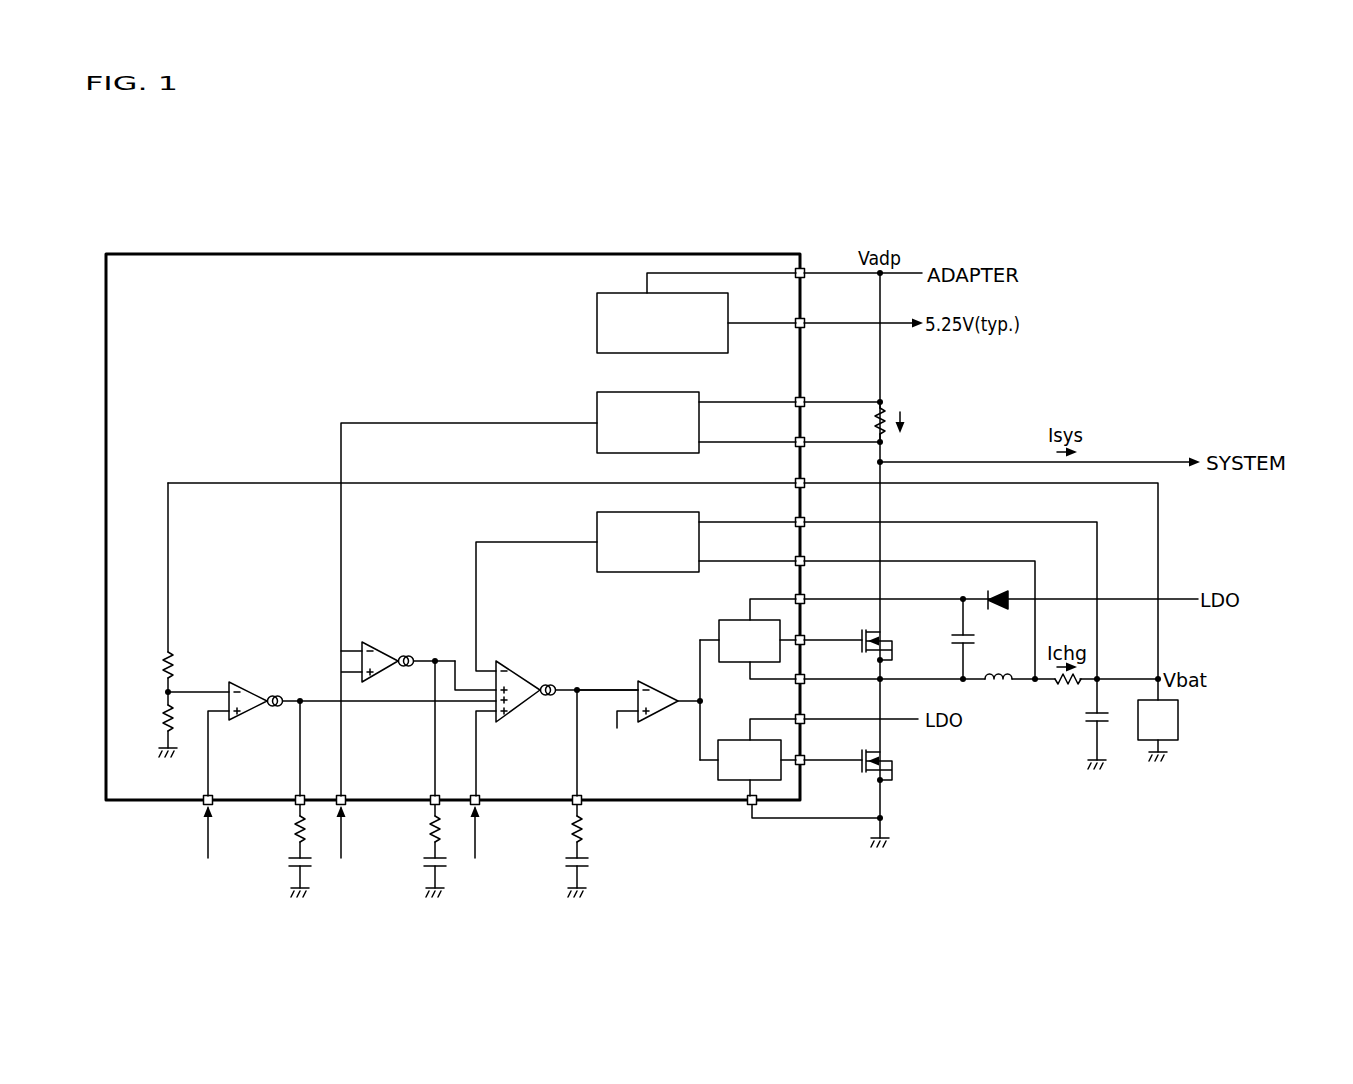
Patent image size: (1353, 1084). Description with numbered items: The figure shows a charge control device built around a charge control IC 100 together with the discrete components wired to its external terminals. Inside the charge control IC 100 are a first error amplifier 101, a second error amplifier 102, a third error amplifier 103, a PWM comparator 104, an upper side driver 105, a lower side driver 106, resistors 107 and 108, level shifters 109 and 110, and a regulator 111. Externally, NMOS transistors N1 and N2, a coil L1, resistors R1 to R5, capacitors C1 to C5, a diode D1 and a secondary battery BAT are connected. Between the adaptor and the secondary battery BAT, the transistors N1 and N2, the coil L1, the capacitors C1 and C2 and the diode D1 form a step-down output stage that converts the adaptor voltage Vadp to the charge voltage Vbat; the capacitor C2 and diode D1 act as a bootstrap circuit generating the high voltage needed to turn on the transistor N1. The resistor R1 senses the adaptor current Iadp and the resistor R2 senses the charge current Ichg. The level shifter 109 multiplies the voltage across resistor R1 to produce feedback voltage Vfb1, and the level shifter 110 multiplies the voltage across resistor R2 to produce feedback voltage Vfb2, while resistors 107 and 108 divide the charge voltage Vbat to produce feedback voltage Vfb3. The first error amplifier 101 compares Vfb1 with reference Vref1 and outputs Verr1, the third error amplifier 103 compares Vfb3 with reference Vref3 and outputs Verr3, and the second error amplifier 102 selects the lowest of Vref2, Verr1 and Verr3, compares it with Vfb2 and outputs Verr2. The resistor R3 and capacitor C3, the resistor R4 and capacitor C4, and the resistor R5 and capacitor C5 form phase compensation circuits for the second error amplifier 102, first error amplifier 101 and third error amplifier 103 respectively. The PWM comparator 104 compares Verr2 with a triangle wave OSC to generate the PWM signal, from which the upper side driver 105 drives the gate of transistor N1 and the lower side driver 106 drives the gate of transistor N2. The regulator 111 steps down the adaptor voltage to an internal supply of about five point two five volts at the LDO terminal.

The charge control IC 100 is at (458, 247).
The first error amplifier 101 is at (388, 645).
The second error amplifier 102 is at (528, 673).
The third error amplifier 103 is at (254, 685).
The PWM comparator 104 is at (662, 682).
The upper side driver 105 is at (714, 630).
The lower side driver 106 is at (714, 762).
The resistor 107 is at (145, 580).
The resistor 108 is at (147, 717).
The level shifter 109 is at (590, 401).
The level shifter 110 is at (590, 521).
The regulator 111 is at (674, 313).
The resistor R1 is at (890, 403).
The resistor R2 is at (1067, 686).
The resistor R3 is at (562, 833).
The resistor R4 is at (419, 833).
The resistor R5 is at (284, 833).
The capacitor C1 is at (1104, 726).
The capacitor C2 is at (980, 639).
The capacitor C3 is at (562, 868).
The capacitor C4 is at (419, 868).
The capacitor C5 is at (284, 868).
The coil L1 is at (1000, 684).
The diode D1 is at (999, 591).
The NMOS field effect transistor N1 is at (897, 646).
The NMOS field effect transistor N2 is at (897, 766).
The secondary battery BAT is at (1158, 720).